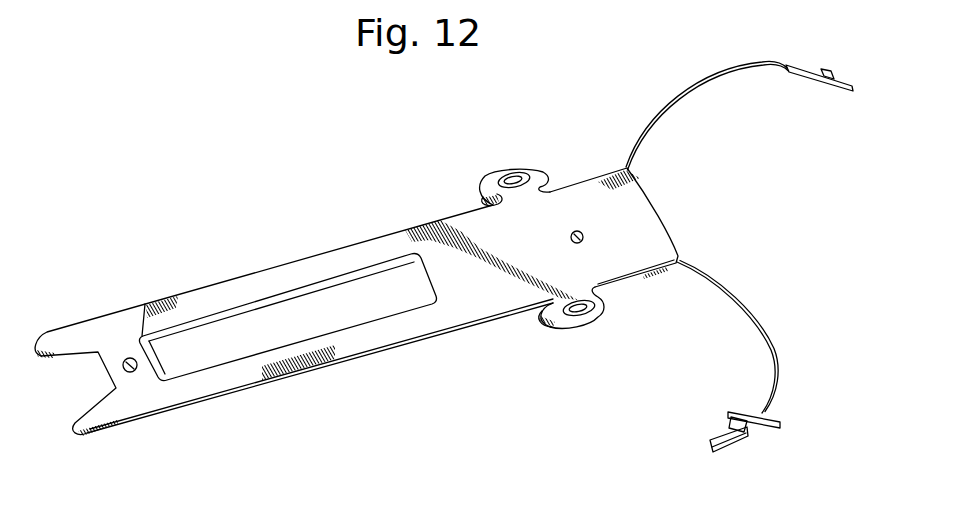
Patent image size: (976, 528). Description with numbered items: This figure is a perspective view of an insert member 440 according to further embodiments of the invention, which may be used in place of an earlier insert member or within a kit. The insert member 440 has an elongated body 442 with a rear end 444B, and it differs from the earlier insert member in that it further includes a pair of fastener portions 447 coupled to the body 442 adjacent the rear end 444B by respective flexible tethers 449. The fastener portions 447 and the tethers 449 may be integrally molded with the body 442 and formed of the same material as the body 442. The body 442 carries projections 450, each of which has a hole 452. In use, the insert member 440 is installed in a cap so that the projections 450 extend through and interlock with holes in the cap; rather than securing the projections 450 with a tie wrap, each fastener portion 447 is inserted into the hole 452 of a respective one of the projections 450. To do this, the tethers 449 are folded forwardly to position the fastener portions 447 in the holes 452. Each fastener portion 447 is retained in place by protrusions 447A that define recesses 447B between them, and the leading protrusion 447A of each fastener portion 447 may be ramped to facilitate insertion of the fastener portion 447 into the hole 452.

The insert member 440 is at (188, 230).
The body 442 is at (337, 267).
The rear end 444B is at (660, 212).
The fastener portion 447 is at (787, 251).
The protrusion 447A is at (817, 67).
The recess 447B is at (830, 73).
The flexible tether 449 is at (723, 67).
The projection 450 is at (497, 175).
The hole 452 is at (517, 172).